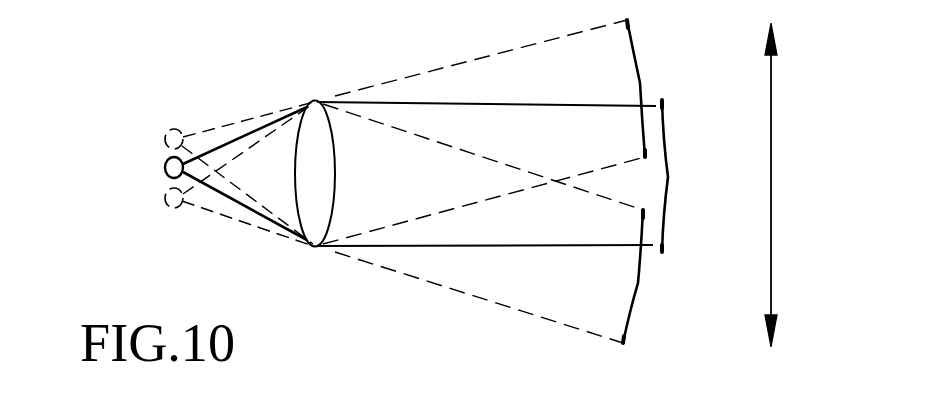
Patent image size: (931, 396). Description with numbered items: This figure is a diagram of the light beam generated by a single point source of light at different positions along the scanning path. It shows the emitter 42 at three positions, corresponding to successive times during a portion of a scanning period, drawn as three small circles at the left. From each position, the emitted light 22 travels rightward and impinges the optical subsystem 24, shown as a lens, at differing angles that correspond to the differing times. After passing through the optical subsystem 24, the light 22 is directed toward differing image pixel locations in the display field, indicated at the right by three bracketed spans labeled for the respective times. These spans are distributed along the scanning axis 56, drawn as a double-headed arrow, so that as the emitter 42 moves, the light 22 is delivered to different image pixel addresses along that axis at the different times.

The emitted light 22 is at (685, 181).
The optical subsystem 24 is at (334, 178).
The emitter 42 is at (164, 167).
The scanning axis 56 is at (772, 186).